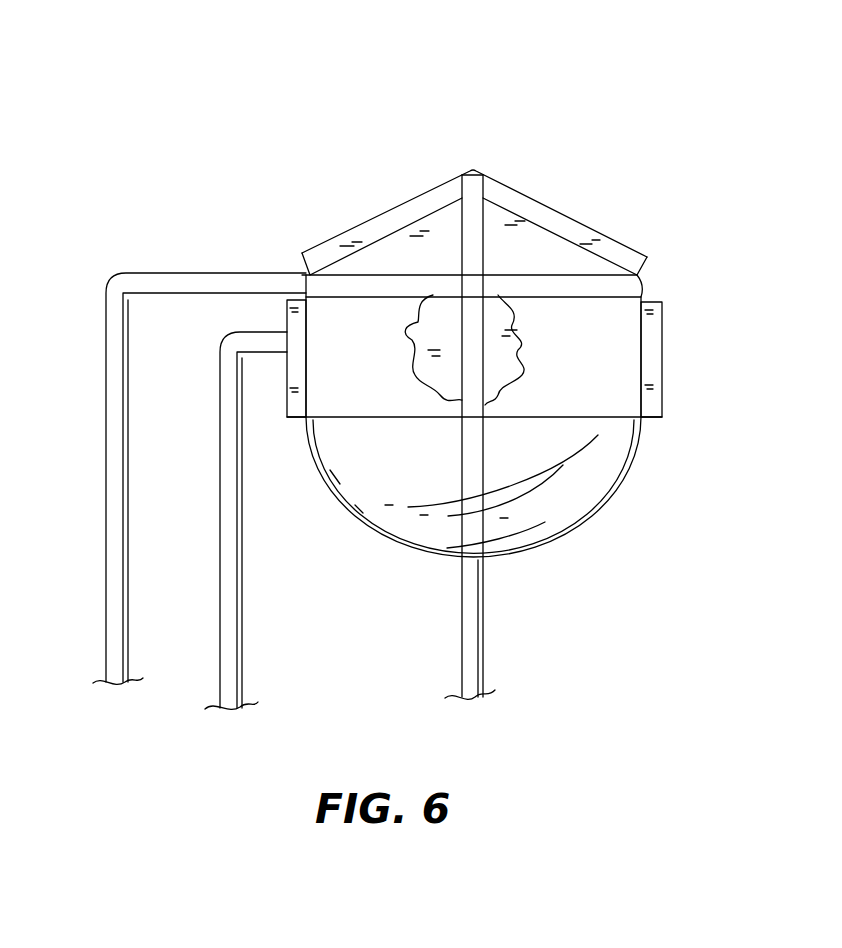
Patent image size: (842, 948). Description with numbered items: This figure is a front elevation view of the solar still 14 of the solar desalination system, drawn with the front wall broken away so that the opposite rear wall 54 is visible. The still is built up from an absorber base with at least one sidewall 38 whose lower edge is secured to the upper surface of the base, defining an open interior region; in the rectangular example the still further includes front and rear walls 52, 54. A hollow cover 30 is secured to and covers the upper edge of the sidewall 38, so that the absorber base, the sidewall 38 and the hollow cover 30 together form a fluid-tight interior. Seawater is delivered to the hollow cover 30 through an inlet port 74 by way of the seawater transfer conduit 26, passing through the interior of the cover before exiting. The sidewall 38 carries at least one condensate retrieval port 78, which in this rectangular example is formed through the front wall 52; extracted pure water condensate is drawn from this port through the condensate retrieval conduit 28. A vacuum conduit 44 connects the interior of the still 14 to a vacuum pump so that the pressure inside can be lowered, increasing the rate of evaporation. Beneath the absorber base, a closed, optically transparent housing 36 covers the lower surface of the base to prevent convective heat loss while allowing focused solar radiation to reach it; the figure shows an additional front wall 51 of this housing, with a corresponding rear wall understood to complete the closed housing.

The solar still 14 is at (150, 82).
The seawater transfer conduit 26 is at (483, 628).
The condensate retrieval conduit 28 is at (106, 462).
The hollow cover 30 is at (528, 186).
The closed, optically transparent housing 36 is at (606, 498).
The sidewall 38 is at (287, 398).
The vacuum conduit 44 is at (240, 562).
The additional front wall 51 is at (545, 522).
The front wall 52 is at (620, 373).
The rear wall 54 is at (435, 325).
The inlet port 74 is at (470, 148).
The condensate retrieval port 78 is at (306, 278).